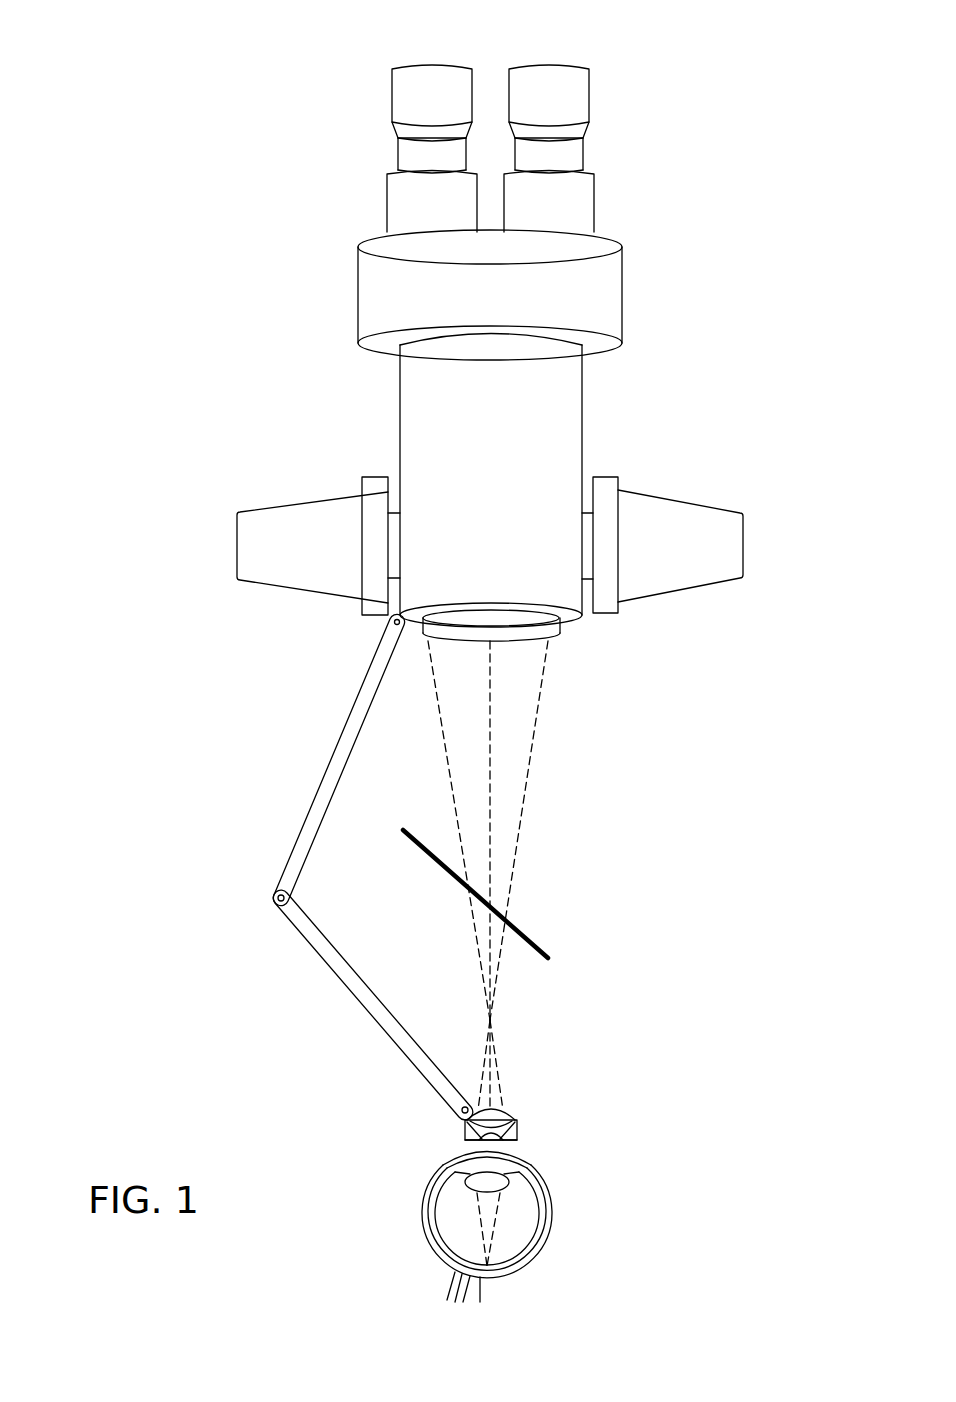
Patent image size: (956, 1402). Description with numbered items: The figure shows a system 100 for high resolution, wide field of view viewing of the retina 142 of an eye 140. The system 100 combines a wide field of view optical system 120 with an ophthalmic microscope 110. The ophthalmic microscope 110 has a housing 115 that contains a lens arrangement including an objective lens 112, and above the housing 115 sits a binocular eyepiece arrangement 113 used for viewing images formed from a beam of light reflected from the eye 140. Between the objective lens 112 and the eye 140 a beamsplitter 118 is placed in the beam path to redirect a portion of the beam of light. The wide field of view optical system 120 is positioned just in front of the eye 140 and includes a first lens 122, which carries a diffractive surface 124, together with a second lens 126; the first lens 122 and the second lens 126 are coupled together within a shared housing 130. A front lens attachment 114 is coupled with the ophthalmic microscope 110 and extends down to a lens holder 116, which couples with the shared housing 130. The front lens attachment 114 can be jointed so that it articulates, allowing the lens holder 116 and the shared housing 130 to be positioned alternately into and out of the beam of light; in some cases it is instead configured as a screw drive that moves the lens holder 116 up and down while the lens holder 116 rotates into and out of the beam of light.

The system 100 is at (175, 70).
The ophthalmic microscope 110 is at (263, 228).
The objective lens 112 is at (533, 643).
The binocular eyepiece arrangement 113 is at (677, 57).
The front lens attachment 114 is at (323, 770).
The housing 115 is at (567, 402).
The lens holder 116 is at (465, 1138).
The beamsplitter 118 is at (532, 938).
The wide field of view optical system 120 is at (530, 1105).
The first lens 122 is at (508, 1106).
The diffractive surface 124 is at (480, 1104).
The second lens 126 is at (500, 1141).
The shared housing 130 is at (463, 1122).
The eye 140 is at (552, 1221).
The retina 142 is at (503, 1277).